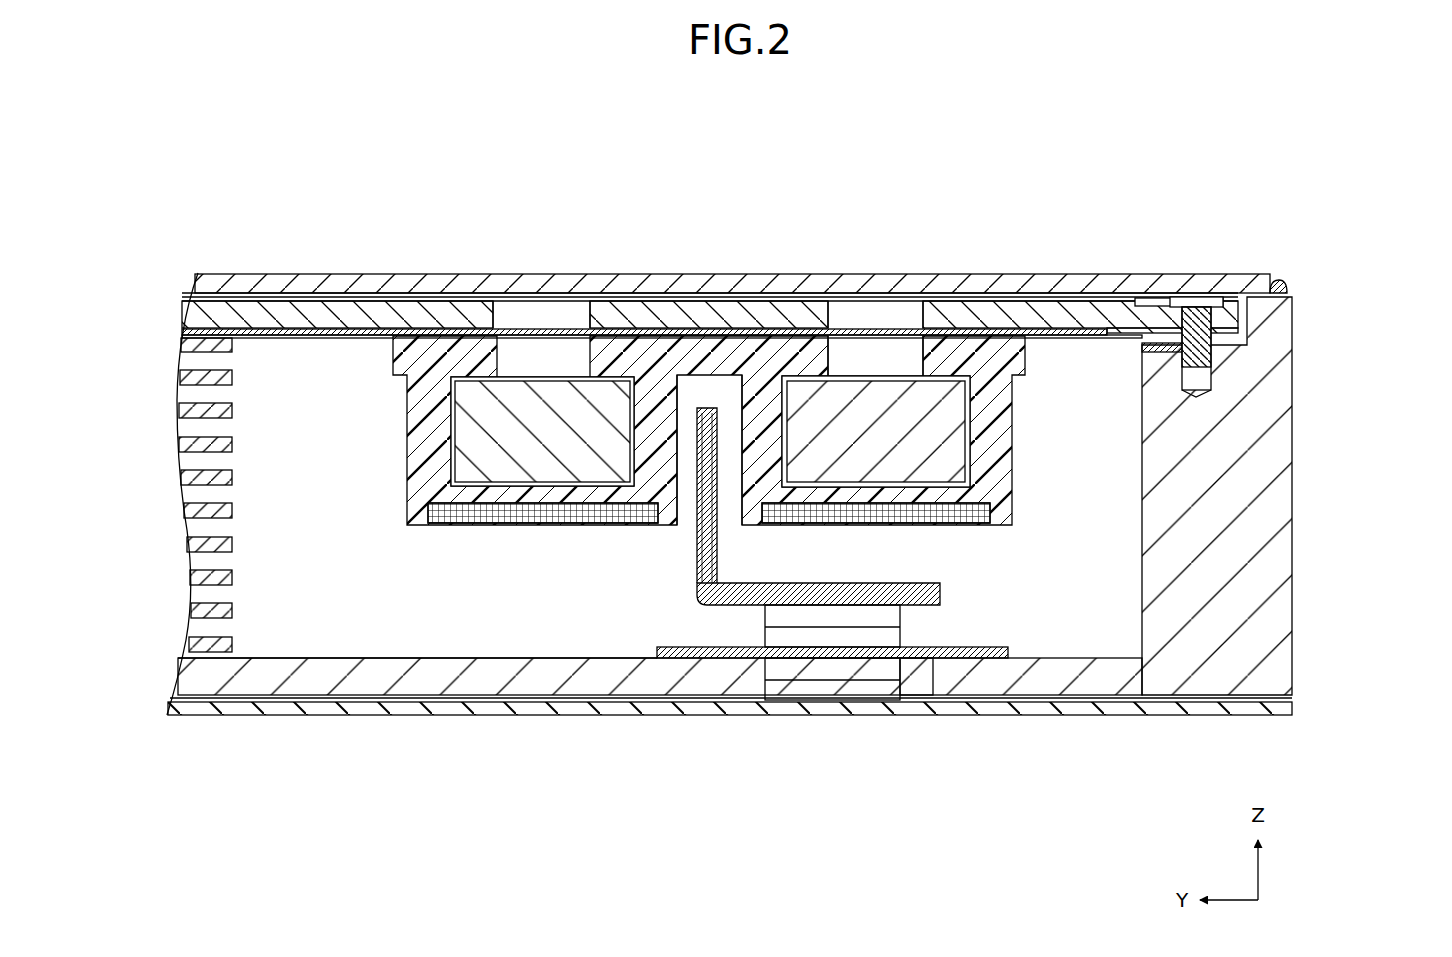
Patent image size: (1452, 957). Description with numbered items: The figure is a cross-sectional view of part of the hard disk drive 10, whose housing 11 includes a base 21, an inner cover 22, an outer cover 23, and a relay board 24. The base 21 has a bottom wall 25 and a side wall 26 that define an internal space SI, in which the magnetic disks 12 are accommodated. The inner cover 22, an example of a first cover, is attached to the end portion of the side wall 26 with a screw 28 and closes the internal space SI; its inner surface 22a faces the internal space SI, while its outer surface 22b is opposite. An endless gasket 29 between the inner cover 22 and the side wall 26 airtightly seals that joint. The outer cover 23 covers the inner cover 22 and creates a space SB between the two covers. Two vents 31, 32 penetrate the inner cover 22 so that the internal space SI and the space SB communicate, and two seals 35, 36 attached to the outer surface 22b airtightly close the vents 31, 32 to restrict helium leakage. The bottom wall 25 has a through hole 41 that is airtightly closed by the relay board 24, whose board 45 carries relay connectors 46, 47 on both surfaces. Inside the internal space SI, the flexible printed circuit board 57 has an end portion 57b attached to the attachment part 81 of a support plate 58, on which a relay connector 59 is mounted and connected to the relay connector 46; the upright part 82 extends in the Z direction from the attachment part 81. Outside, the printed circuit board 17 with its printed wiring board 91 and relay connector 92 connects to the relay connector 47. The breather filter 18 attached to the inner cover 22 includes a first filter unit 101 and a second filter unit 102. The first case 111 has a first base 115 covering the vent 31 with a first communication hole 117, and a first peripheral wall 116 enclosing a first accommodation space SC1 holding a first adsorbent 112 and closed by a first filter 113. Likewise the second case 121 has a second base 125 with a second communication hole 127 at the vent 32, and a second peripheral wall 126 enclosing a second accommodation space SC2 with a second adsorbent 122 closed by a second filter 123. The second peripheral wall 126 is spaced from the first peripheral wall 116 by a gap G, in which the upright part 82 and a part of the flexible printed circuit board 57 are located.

The hard disk drive 10 is at (198, 125).
The housing 11 is at (1253, 496).
The magnetic disks 12 is at (195, 378).
The printed circuit board 17 is at (403, 719).
The breather filter 18 is at (739, 498).
The base 21 is at (1253, 496).
The inner cover 22 is at (185, 312).
The inner surface 22a is at (312, 350).
The outer surface 22b is at (372, 348).
The outer cover 23 is at (200, 278).
The relay board 24 is at (832, 718).
The bottom wall 25 is at (572, 680).
The side wall 26 is at (1294, 420).
The screw 28 is at (1202, 303).
The gasket 29 is at (1158, 330).
The vent 31 is at (508, 306).
The vent 32 is at (843, 308).
The seal 35 is at (545, 300).
The seal 36 is at (903, 345).
The through hole 41 is at (920, 690).
The board 45 is at (743, 658).
The relay connector 46 is at (789, 719).
The relay connector 47 is at (832, 746).
The flexible printed circuit board 57 is at (695, 553).
The end portion 57b is at (852, 708).
The support plate 58 is at (685, 378).
The relay connector 59 is at (773, 638).
The attachment part 81 is at (930, 605).
The upright part 82 is at (722, 385).
The printed wiring board 91 is at (342, 712).
The relay connector 92 is at (835, 672).
The first filter unit 101 is at (739, 498).
The second filter unit 102 is at (739, 498).
The first case 111 is at (739, 498).
The first adsorbent 112 is at (473, 400).
The first filter 113 is at (739, 498).
The first base 115 is at (739, 498).
The first peripheral wall 116 is at (739, 498).
The first communication hole 117 is at (739, 498).
The second case 121 is at (739, 498).
The second adsorbent 122 is at (893, 330).
The second filter 123 is at (739, 498).
The second base 125 is at (407, 431).
The second peripheral wall 126 is at (739, 498).
The second communication hole 127 is at (1000, 350).
The gap G is at (712, 408).
The space SB is at (290, 290).
The internal space SI is at (300, 629).
The first accommodation space SC1 is at (488, 498).
The second accommodation space SC2 is at (956, 497).